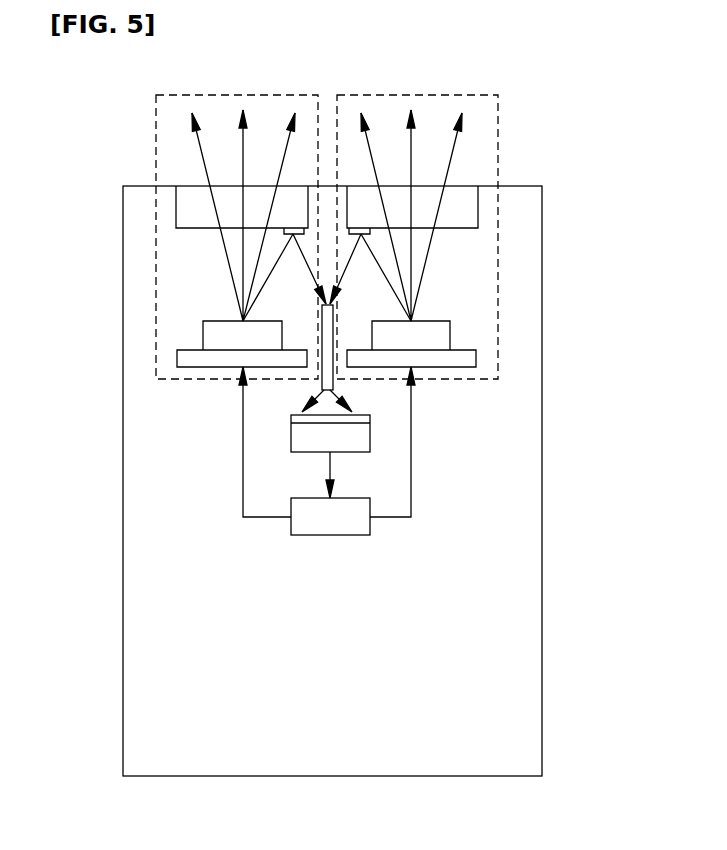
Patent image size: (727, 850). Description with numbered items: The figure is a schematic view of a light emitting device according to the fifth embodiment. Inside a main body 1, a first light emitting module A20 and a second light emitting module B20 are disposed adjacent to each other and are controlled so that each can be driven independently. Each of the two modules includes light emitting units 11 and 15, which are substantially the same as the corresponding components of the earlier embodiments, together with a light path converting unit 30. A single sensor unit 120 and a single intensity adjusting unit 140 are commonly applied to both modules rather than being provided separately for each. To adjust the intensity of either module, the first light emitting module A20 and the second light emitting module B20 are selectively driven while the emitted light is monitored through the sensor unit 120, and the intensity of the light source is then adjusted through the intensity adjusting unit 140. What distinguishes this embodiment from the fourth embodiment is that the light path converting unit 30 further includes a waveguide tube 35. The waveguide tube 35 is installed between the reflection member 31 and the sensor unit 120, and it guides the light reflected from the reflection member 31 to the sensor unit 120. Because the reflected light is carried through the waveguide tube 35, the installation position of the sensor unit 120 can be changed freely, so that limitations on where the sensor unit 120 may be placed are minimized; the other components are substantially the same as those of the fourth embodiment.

The main body 1 is at (542, 530).
The first light emitting module A20 is at (156, 140).
The second light emitting module B20 is at (498, 141).
The light emitting unit 15 is at (478, 208).
The reflection member 31 is at (370, 233).
The light emitting unit 11 is at (450, 335).
The waveguide tube 35 is at (322, 384).
The light path converting unit 30 is at (366, 395).
The sensor unit 120 is at (390, 450).
The intensity adjusting unit 140 is at (330, 535).